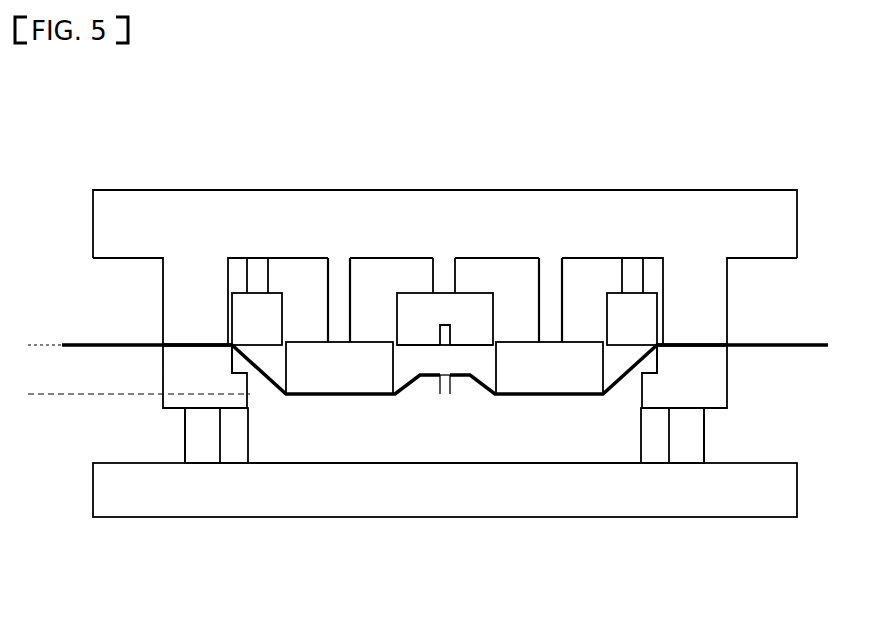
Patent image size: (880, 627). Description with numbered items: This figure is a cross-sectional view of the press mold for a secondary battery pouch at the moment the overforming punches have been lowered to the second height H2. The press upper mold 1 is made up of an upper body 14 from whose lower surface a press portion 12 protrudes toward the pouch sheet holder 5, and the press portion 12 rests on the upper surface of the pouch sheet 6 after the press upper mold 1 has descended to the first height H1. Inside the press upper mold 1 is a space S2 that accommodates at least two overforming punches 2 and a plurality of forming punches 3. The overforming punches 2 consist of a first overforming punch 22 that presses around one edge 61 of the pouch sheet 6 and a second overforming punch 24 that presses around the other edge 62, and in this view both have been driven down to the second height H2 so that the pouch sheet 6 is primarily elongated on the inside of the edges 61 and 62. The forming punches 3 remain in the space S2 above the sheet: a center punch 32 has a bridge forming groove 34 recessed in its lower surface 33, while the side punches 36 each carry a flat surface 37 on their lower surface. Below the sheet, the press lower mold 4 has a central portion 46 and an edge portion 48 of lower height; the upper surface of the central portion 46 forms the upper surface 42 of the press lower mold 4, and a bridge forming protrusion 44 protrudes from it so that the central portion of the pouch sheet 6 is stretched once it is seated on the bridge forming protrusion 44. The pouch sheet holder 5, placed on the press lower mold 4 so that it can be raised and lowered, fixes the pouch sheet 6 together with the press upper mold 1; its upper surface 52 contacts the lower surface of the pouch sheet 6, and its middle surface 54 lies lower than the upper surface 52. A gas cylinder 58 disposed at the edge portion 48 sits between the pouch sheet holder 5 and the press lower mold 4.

The press upper mold 1 is at (42, 215).
The upper body 14 is at (105, 225).
The press portion 12 is at (172, 305).
The overforming punch 2 is at (316, 340).
The first overforming punch 22 is at (339, 326).
The second overforming punch 24 is at (549, 326).
The forming punch 3 is at (242, 300).
The center punch 32 is at (453, 409).
The side punch 36 is at (444, 301).
The lower surface 33 is at (420, 348).
The bridge forming groove 34 is at (448, 347).
The space S2 is at (393, 265).
The pouch sheet 6 is at (98, 344).
The one edge 61 is at (200, 344).
The other edge 62 is at (695, 342).
The first height H1 is at (34, 345).
The second height H2 is at (128, 394).
The pouch sheet holder 5 is at (183, 375).
The upper surface 52 is at (195, 351).
The flat surface 37 is at (233, 374).
The middle surface 54 is at (238, 378).
The gas cylinder 58 is at (185, 437).
The press lower mold 4 is at (338, 590).
The edge portion 48 is at (205, 500).
The central portion 46 is at (330, 432).
The upper surface 42 is at (473, 396).
The bridge forming protrusion 44 is at (435, 380).